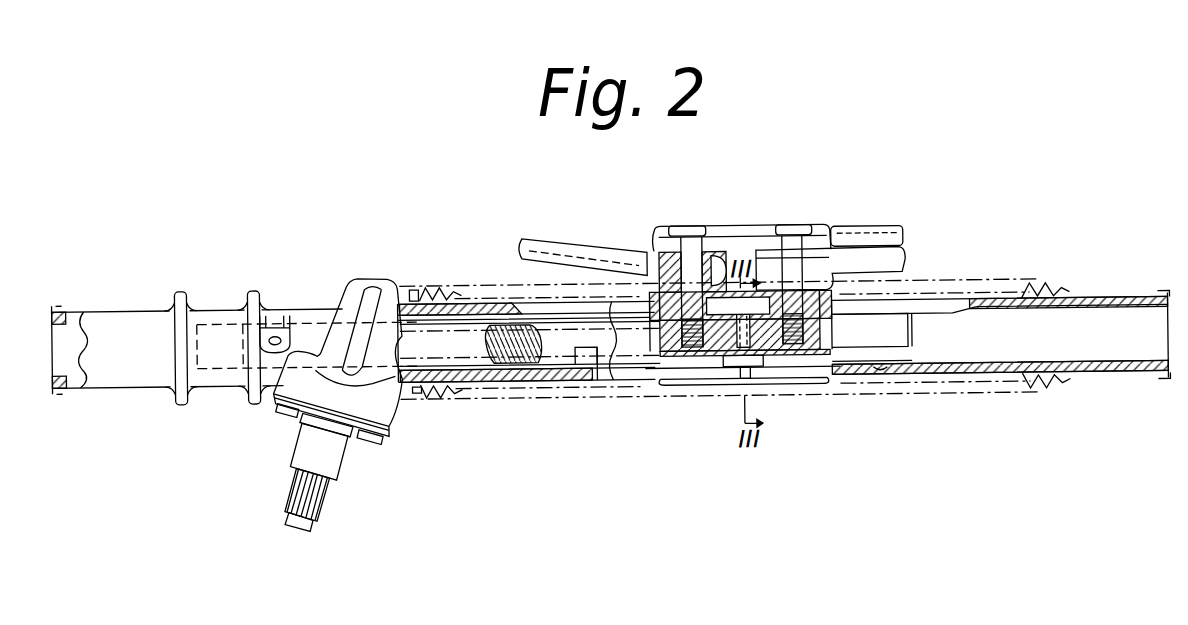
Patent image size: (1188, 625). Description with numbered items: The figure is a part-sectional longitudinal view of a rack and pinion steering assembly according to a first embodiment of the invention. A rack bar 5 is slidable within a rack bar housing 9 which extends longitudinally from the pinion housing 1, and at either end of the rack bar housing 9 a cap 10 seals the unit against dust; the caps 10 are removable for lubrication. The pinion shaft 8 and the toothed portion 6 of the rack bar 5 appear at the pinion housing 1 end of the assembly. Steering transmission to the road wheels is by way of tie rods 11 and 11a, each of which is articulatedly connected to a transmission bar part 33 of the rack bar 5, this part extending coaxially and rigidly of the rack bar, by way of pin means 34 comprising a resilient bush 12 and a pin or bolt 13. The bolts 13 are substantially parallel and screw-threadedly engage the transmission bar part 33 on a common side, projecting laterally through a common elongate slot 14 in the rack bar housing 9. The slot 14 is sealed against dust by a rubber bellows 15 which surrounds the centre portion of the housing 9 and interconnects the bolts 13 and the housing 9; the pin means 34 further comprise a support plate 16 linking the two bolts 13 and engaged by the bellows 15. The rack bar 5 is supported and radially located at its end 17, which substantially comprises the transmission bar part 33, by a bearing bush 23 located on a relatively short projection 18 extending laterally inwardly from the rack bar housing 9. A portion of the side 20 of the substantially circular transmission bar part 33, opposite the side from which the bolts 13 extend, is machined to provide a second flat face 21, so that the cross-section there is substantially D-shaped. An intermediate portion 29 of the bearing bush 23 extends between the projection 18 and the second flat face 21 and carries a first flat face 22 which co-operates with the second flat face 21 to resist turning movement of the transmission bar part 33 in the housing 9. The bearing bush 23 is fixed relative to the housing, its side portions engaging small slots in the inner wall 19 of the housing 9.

The pinion housing 1 is at (392, 398).
The rack bar 5 is at (218, 352).
The rack teeth 6 is at (500, 343).
The pinion shaft 8 is at (303, 484).
The rack bar housing 9 is at (878, 381).
The cap 10 is at (85, 334).
The tie rod 11 is at (553, 248).
The tie rod 11a is at (882, 253).
The resilient bush 12 is at (718, 260).
The bolt 13 is at (688, 227).
The elongate slot 14 is at (922, 311).
The rubber bellows 15 is at (432, 285).
The support plate 16 is at (716, 305).
The end of the rack bar 17 is at (657, 350).
The projection 18 is at (728, 292).
The inner wall 19 is at (953, 367).
The side of the transmission bar part 20 is at (580, 350).
The second flat face 21 is at (905, 352).
The first flat face 22 is at (792, 372).
The bearing bush 23 is at (757, 358).
The intermediate portion 29 is at (750, 318).
The transmission bar part 33 is at (599, 380).
The pin means 34 is at (652, 248).